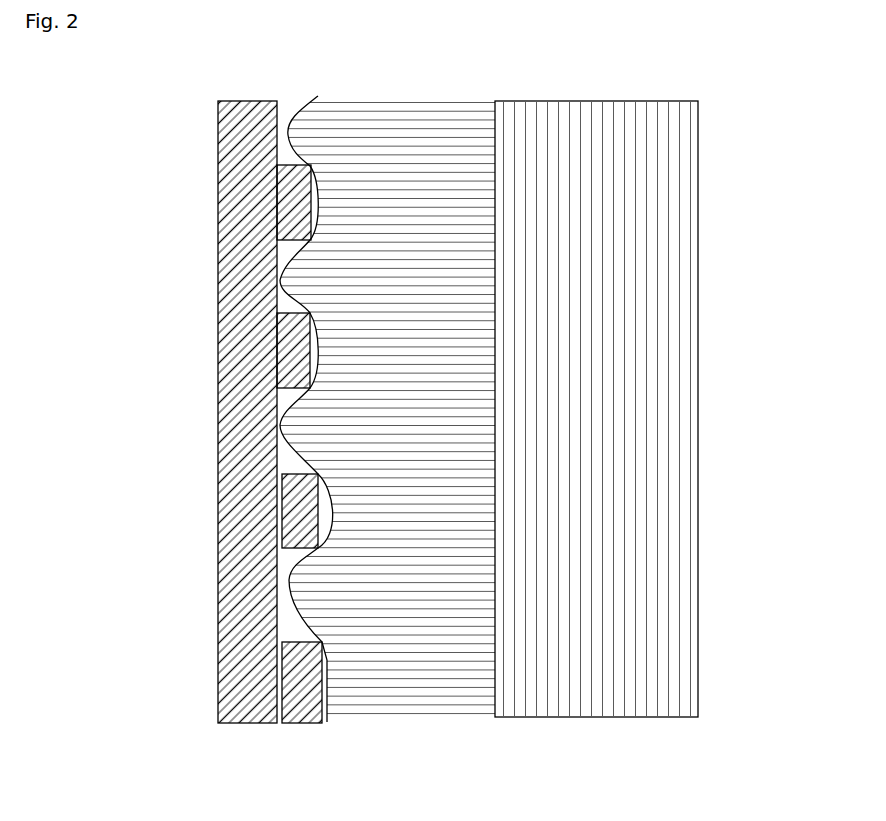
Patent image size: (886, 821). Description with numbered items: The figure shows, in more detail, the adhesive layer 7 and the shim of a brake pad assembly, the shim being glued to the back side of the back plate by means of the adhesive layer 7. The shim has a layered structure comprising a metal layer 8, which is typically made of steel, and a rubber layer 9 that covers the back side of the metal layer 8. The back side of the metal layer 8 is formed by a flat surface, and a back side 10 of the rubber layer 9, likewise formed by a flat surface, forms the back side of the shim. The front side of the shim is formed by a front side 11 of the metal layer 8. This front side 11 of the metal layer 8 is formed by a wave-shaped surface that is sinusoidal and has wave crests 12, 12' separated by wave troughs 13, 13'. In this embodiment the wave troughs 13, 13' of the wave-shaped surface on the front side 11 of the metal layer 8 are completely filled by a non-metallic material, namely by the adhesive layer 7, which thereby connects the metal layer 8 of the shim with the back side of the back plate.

The adhesive layer 7 is at (230, 170).
The metal layer 8 is at (403, 700).
The rubber layer 9 is at (680, 378).
The back side of the rubber layer 10 is at (698, 187).
The front side of the metal layer 11 is at (285, 291).
The wave crest 12 is at (235, 595).
The wave crest 12' is at (226, 422).
The wave trough 13 is at (241, 511).
The wave trough 13' is at (226, 352).